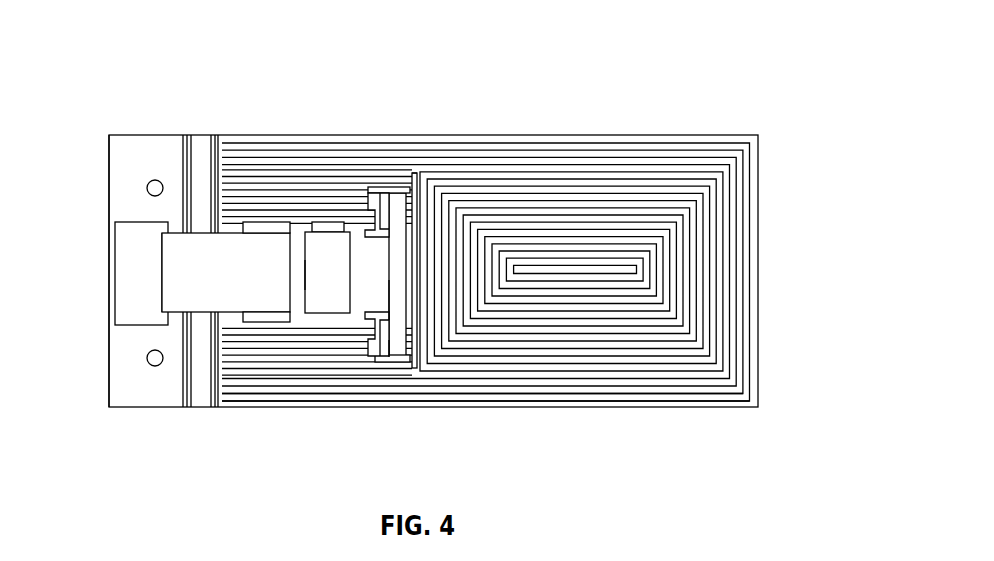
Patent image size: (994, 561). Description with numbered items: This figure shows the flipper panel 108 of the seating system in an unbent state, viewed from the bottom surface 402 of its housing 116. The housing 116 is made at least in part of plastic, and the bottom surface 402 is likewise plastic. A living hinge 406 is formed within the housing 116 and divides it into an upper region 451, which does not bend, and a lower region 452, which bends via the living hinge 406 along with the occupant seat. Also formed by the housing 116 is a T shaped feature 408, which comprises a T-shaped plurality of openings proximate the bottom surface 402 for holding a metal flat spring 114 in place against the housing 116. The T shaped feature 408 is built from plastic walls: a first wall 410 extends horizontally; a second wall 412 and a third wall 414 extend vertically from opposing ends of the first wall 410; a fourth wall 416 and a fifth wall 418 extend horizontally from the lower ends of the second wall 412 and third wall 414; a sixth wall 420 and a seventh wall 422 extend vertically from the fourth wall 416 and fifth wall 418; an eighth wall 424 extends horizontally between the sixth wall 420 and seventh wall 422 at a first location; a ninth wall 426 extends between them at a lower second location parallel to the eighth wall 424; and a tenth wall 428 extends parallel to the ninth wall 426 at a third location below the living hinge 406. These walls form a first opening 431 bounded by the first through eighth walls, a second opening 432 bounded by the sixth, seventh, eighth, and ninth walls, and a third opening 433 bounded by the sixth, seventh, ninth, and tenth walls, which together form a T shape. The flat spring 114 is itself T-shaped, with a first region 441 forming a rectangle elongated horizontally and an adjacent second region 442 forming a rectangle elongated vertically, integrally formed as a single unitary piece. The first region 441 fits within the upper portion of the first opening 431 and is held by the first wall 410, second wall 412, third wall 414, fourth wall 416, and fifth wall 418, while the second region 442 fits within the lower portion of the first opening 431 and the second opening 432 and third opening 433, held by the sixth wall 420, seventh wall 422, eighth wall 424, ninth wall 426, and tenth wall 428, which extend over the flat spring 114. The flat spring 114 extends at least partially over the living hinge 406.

The flipper panel 108 is at (768, 110).
The flat spring 114 is at (405, 358).
The housing 116 is at (697, 403).
The bottom surface 402 is at (663, 345).
The living hinge 406 is at (198, 135).
The T shaped feature 408 is at (135, 240).
The first wall 410 is at (410, 275).
The second wall 412 is at (396, 190).
The third wall 414 is at (397, 300).
The fourth wall 416 is at (378, 190).
The fifth wall 418 is at (377, 362).
The sixth wall 420 is at (277, 222).
The seventh wall 422 is at (416, 175).
The eighth wall 424 is at (350, 237).
The ninth wall 426 is at (282, 305).
The tenth wall 428 is at (180, 305).
The first opening 431 is at (720, 387).
The second opening 432 is at (318, 280).
The third opening 433 is at (172, 254).
The first region 441 is at (402, 247).
The second region 442 is at (180, 310).
The upper region 451 is at (490, 247).
The lower region 452 is at (113, 234).